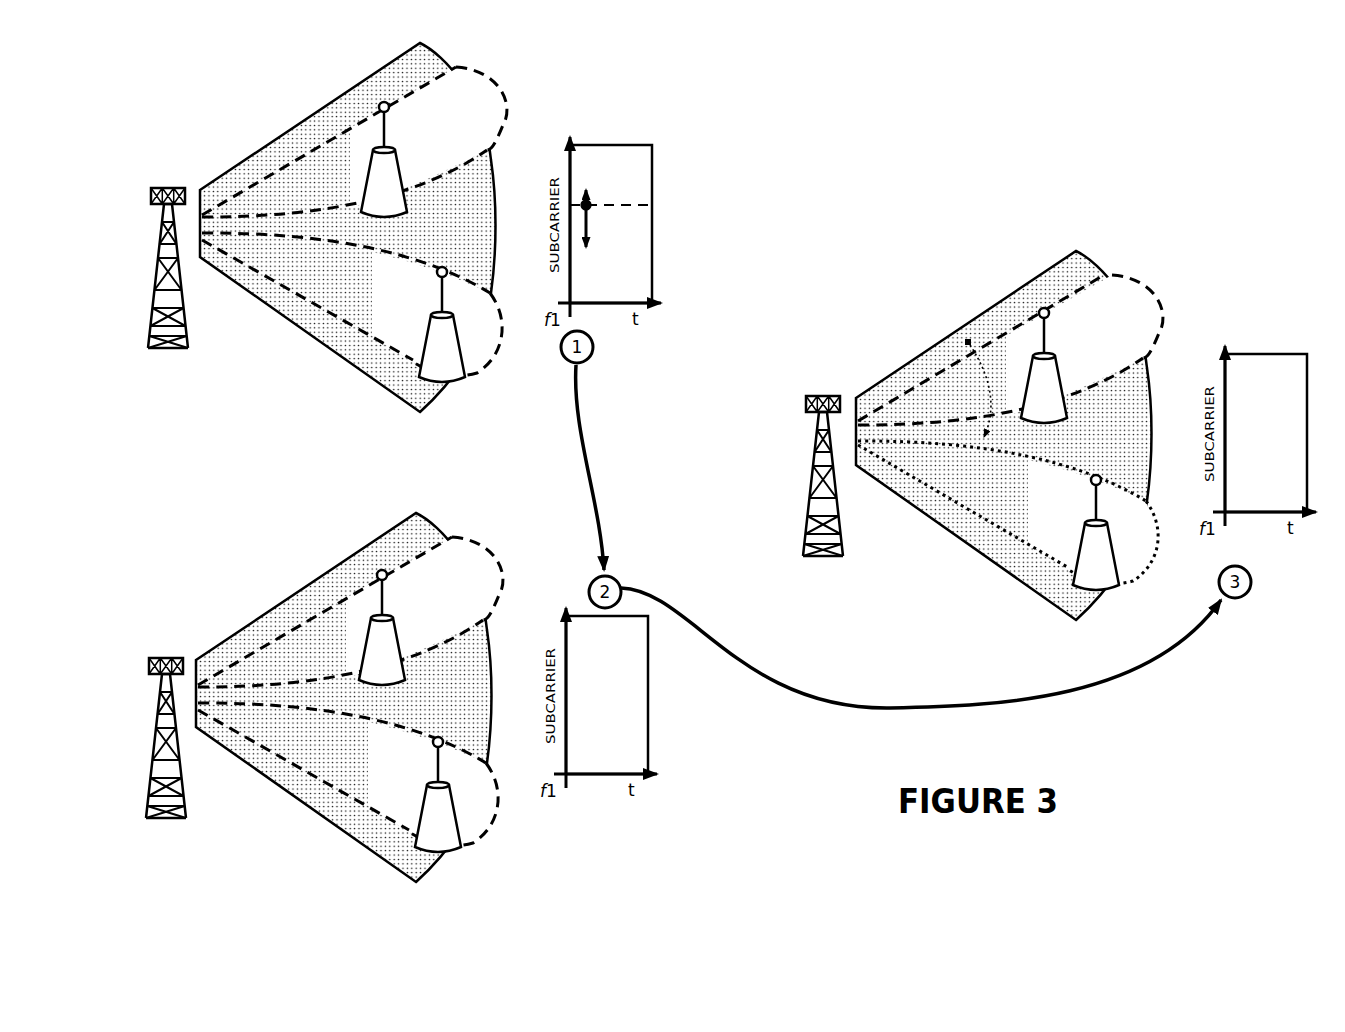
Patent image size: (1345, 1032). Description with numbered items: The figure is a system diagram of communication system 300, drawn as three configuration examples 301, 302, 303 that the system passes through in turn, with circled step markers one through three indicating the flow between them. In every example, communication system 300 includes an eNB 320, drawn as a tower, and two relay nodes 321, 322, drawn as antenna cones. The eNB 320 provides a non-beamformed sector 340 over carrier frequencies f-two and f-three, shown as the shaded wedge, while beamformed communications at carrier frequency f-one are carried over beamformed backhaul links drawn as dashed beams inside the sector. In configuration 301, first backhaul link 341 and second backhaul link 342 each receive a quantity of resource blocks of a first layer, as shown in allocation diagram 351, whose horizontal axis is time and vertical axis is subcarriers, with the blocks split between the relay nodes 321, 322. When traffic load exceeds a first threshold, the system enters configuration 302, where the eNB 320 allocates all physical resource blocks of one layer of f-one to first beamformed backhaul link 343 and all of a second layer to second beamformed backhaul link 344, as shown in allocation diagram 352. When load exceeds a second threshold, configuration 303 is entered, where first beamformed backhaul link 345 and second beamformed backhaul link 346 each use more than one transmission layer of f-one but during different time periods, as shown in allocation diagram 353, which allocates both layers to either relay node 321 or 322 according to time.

The communication system 300 is at (247, 91).
The first configuration 301 is at (331, 243).
The second configuration 302 is at (328, 706).
The third configuration 303 is at (992, 450).
The eNB 320 is at (189, 347).
The first relay node 321 is at (1072, 358).
The second relay node 322 is at (1079, 526).
The sector 340 is at (886, 382).
The first beamformed backhaul link 341 is at (498, 93).
The second beamformed backhaul link 342 is at (499, 356).
The first beamformed backhaul link 343 is at (494, 563).
The second beamformed backhaul link 344 is at (495, 826).
The first beamformed backhaul link 345 is at (1154, 298).
The second beamformed backhaul link 346 is at (1155, 566).
The allocation diagram 351 is at (602, 233).
The allocation diagram 352 is at (598, 704).
The allocation diagram 353 is at (1257, 442).